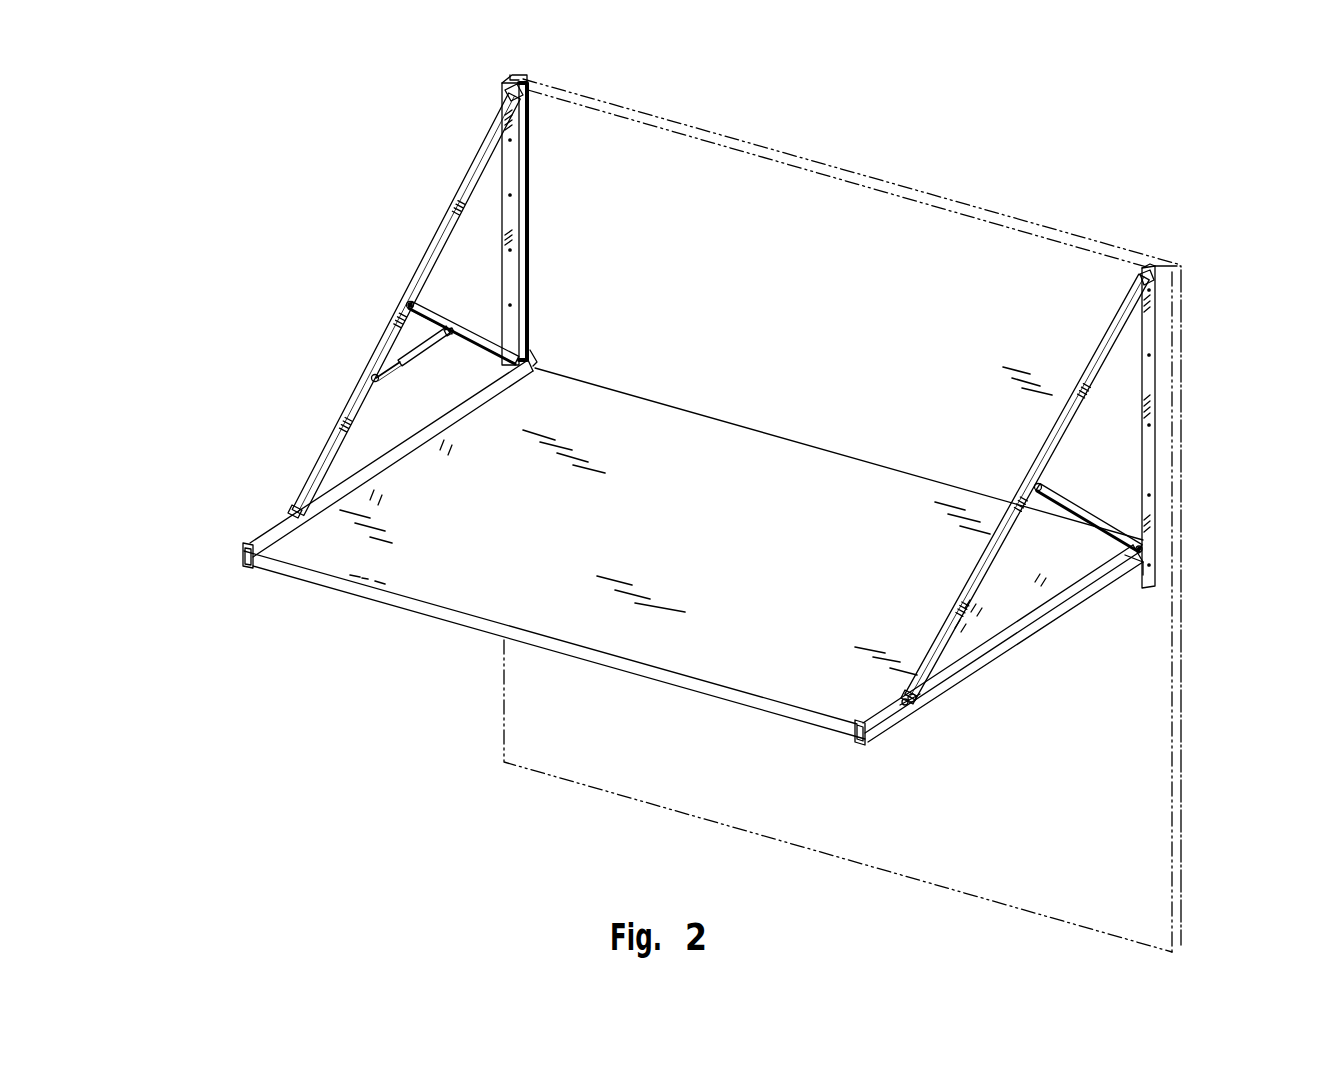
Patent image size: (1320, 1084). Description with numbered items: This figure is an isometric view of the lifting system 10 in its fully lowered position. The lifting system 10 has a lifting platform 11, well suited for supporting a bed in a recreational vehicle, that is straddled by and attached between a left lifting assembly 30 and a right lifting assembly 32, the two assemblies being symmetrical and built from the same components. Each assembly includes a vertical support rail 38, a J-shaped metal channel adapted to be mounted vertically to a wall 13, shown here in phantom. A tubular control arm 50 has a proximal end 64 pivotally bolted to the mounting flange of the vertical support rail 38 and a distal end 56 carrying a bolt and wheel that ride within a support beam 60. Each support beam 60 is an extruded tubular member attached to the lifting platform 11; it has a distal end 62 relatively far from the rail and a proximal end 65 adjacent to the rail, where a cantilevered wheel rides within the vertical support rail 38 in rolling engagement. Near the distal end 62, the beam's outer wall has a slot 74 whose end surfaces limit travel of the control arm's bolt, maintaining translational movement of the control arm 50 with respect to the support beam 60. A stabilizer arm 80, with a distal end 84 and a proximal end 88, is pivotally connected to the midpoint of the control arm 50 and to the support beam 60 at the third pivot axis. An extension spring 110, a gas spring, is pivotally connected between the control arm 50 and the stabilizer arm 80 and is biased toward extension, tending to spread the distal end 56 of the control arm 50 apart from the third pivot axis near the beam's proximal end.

The lifting system 10 is at (450, 657).
The lifting platform 11 is at (397, 577).
The wall 13 is at (786, 153).
The left lifting assembly 30 is at (385, 269).
The right lifting assembly 32 is at (1085, 350).
The vertical support rail 38 is at (528, 131).
The control arm 50 is at (378, 343).
The distal end of control arm 56 is at (285, 498).
The support beam 60 is at (262, 520).
The distal end of support beam 62 is at (881, 743).
The proximal end 64 is at (492, 125).
The proximal end of support beam 65 is at (1125, 592).
The slot 74 is at (902, 700).
The stabilizer arm 80 is at (488, 345).
The distal end of stabilizer arm 84 is at (445, 303).
The proximal end of stabilizer arm 88 is at (1122, 522).
The extension spring 110 is at (430, 350).